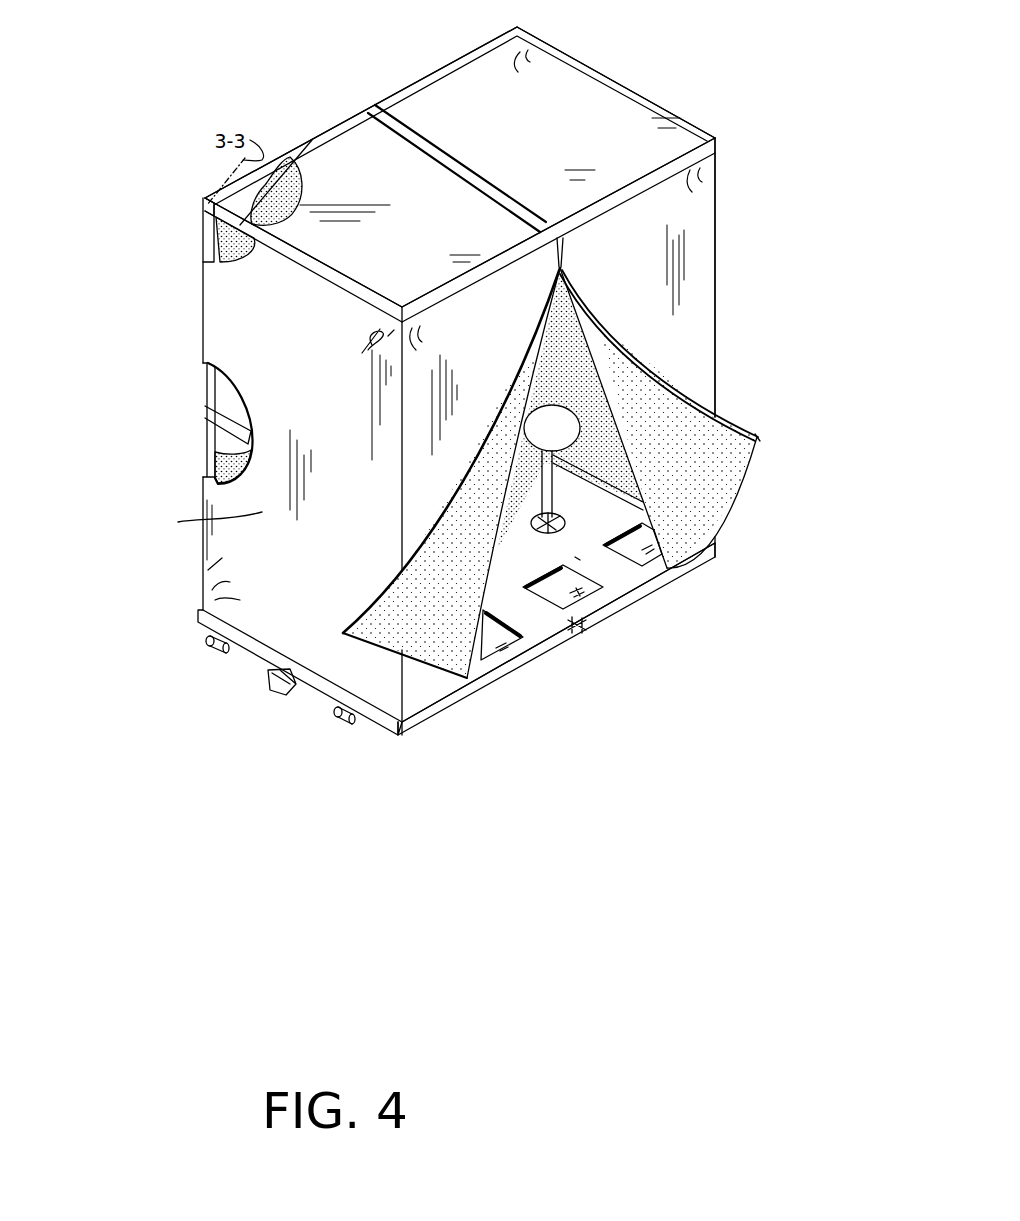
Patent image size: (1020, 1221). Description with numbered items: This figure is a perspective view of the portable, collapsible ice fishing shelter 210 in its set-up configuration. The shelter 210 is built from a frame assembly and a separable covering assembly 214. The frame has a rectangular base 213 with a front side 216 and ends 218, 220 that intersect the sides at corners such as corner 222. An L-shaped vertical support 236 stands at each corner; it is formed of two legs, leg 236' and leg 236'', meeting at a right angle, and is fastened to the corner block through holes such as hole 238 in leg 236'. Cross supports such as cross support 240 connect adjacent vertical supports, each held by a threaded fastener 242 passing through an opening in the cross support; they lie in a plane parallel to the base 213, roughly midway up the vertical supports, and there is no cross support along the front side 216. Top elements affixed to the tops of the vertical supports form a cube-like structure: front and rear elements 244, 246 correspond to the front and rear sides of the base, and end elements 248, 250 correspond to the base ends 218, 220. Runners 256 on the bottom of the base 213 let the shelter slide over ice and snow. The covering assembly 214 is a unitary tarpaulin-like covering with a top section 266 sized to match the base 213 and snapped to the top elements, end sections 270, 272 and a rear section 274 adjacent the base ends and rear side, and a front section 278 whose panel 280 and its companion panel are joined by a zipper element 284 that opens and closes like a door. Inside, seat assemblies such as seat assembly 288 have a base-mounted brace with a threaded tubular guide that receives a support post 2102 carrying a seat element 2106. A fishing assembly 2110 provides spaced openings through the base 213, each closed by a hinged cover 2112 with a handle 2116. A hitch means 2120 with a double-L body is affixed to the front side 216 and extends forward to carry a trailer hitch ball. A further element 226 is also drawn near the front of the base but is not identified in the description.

The ice fishing shelter 210 is at (747, 213).
The base 213 is at (267, 685).
The covering assembly 214 is at (607, 108).
The front side 216 is at (620, 603).
The end 218 is at (380, 717).
The end 220 is at (637, 503).
The corner 222 is at (402, 730).
The floor mat 226 is at (503, 656).
The vertical support 236 is at (141, 420).
The leg 236' is at (197, 239).
The leg 236'' is at (181, 191).
The hole 238 is at (209, 220).
The cross support 240 is at (227, 430).
The threaded fastener 242 is at (212, 418).
The front element 244 is at (540, 232).
The rear element 246 is at (356, 110).
The end element 248 is at (303, 260).
The end element 250 is at (562, 52).
The runners 256 is at (207, 645).
The top section 266 is at (430, 130).
The end section 270 is at (575, 352).
The end section 272 is at (185, 531).
The rear section 274 is at (328, 136).
The front section 278 is at (687, 353).
The panel 280 is at (703, 303).
The zipper element 284 is at (762, 437).
The seat assembly 288 is at (524, 520).
The stool post 2102 is at (554, 470).
The seat element 2106 is at (538, 443).
The fishing assembly 2110 is at (577, 556).
The cover 2112 is at (634, 567).
The handle 2116 is at (574, 588).
The hitch means 2120 is at (583, 628).